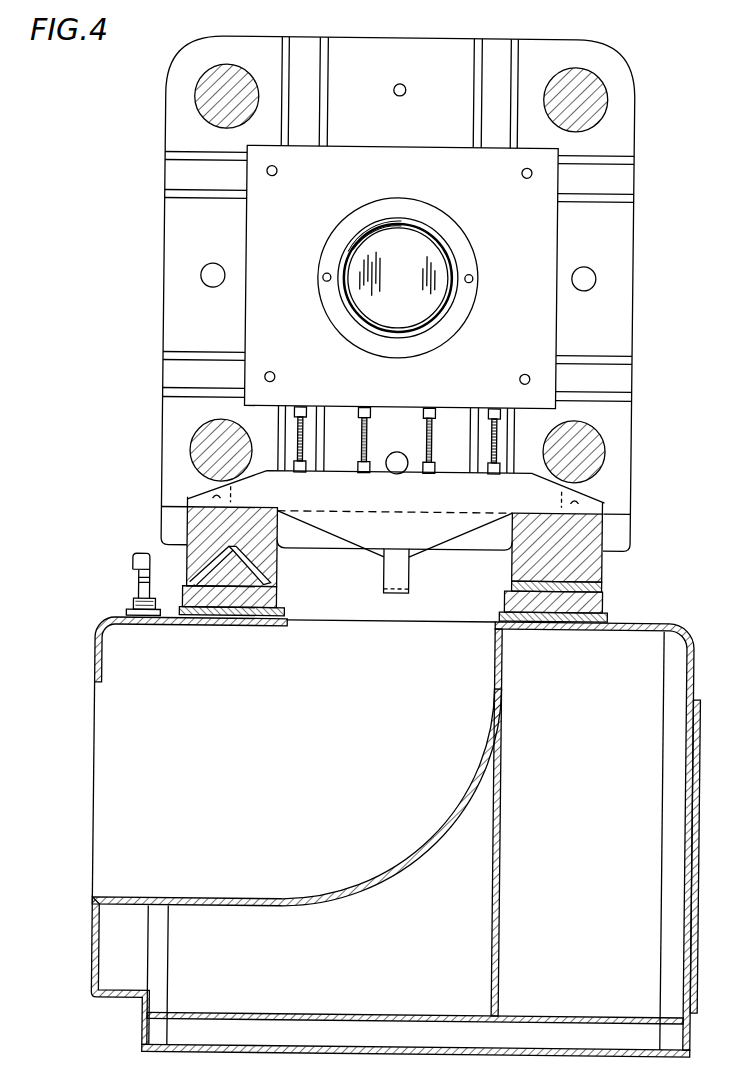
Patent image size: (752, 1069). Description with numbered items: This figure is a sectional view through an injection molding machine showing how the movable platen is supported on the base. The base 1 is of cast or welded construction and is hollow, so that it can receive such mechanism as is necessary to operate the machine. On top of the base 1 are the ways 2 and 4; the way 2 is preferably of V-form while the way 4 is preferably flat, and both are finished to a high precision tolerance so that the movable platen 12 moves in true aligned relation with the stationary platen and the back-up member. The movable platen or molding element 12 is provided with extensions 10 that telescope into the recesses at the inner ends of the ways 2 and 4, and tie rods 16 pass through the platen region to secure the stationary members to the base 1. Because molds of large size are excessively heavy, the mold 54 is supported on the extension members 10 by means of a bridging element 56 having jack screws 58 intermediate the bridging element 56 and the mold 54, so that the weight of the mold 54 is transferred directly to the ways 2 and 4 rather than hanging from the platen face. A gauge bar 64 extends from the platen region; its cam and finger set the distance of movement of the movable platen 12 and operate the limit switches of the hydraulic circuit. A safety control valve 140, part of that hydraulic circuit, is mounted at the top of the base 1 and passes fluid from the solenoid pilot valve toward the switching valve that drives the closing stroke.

The base 1 is at (688, 638).
The way 2 is at (268, 603).
The way 4 is at (590, 600).
The extension 10 is at (200, 512).
The movable platen 12 is at (632, 88).
The tie rod 16 is at (592, 112).
The mold 54 is at (543, 338).
The bridging element 56 is at (445, 530).
The jack screw 58 is at (478, 428).
The gauge bar 64 is at (402, 593).
The safety control valve 140 is at (134, 581).